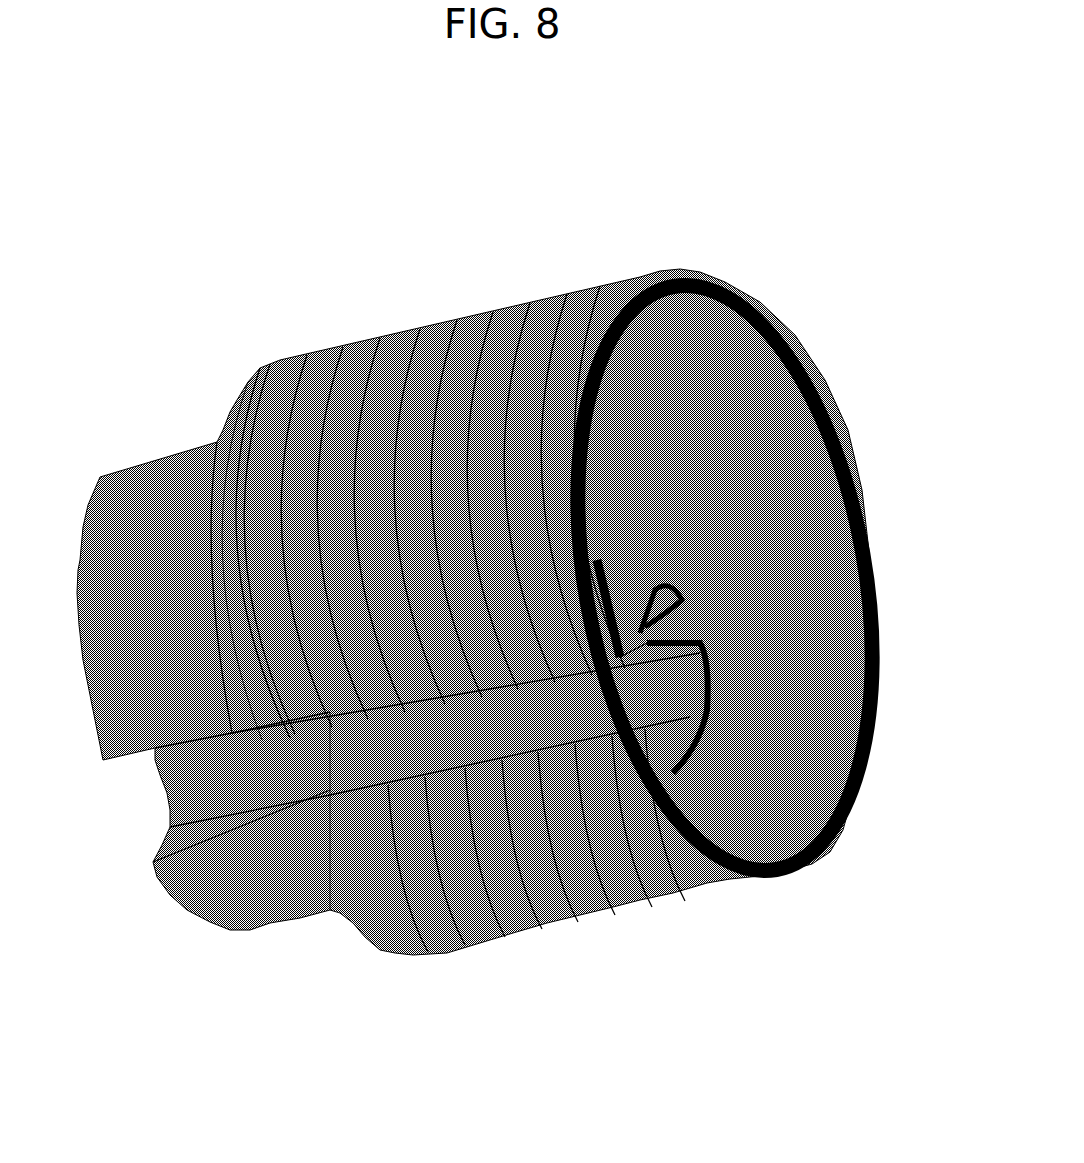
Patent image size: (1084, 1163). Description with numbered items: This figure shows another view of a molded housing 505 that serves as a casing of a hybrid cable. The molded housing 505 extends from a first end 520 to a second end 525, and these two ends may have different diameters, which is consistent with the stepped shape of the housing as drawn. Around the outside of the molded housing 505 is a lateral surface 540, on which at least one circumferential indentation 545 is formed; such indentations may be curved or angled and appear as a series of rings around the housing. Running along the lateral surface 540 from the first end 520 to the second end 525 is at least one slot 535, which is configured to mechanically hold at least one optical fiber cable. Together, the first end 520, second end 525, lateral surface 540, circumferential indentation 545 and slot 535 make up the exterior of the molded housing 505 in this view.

The molded housing 505 is at (475, 595).
The first end 520 is at (190, 917).
The lateral surface 540 is at (253, 383).
The circumferential indentation 545 is at (403, 353).
The second end 525 is at (860, 516).
The slot 535 is at (712, 697).